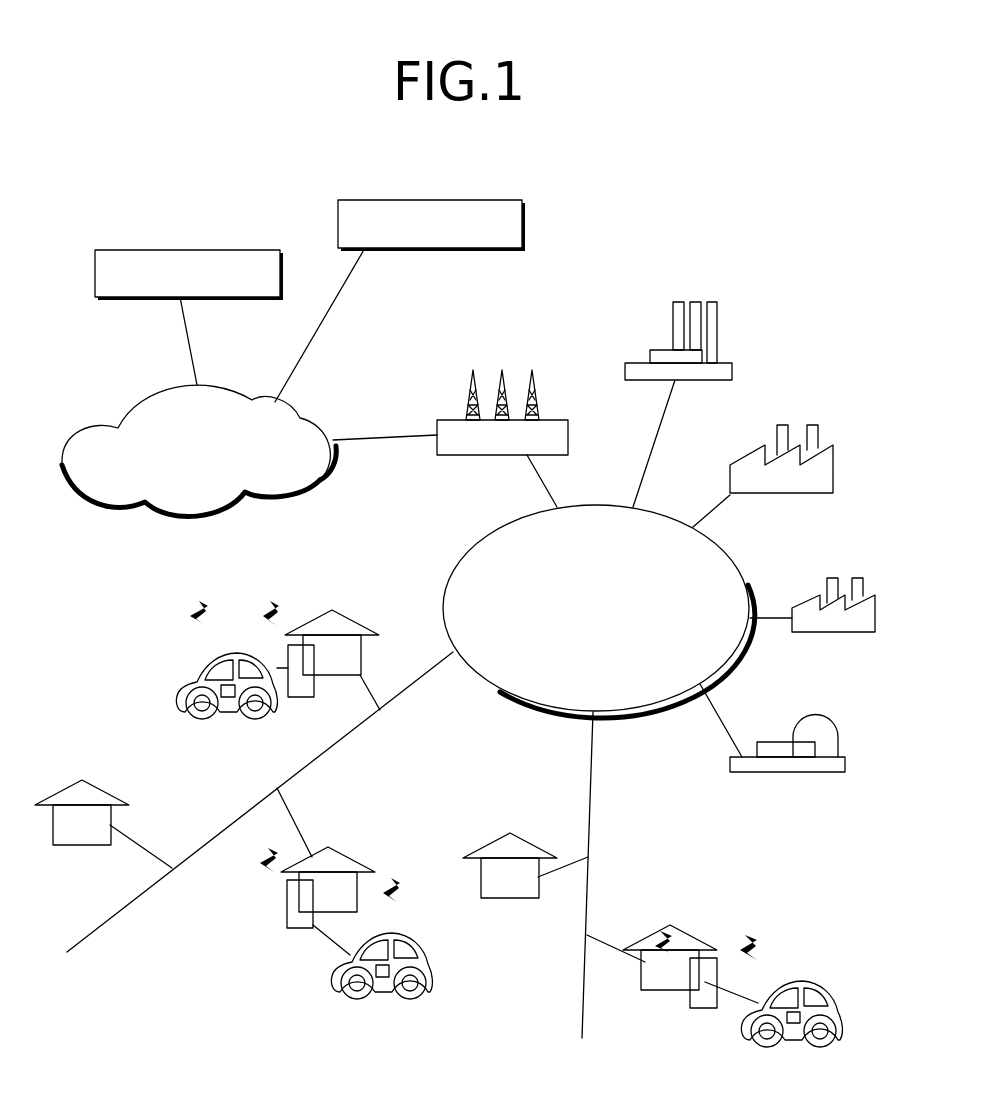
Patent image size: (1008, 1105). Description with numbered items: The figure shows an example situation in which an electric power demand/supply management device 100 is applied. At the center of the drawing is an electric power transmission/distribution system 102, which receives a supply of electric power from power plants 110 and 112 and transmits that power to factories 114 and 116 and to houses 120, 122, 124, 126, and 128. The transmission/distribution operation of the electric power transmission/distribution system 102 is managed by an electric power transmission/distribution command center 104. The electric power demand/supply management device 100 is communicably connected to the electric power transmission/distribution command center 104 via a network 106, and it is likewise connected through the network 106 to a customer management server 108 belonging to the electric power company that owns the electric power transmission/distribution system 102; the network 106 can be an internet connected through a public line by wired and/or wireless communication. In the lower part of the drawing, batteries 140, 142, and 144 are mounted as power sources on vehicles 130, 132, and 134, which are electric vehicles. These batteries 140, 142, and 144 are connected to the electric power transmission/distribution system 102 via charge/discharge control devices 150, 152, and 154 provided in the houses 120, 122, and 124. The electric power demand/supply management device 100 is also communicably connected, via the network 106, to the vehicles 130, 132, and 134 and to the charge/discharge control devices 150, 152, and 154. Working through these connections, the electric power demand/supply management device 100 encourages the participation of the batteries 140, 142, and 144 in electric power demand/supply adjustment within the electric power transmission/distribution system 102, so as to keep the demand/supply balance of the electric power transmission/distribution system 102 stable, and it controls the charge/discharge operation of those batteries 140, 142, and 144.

The electric power demand/supply management device 100 is at (132, 252).
The electric power transmission/distribution system 102 is at (470, 565).
The electric power transmission/distribution command center 104 is at (452, 428).
The network 106 is at (115, 432).
The customer management server 108 is at (378, 200).
The power plant 110 is at (656, 356).
The power plant 112 is at (812, 720).
The factory 114 is at (740, 467).
The factory 116 is at (812, 605).
The house 120 is at (320, 627).
The house 122 is at (338, 848).
The house 124 is at (678, 927).
The house 126 is at (495, 848).
The house 128 is at (80, 795).
The vehicle 130 is at (183, 686).
The vehicle 132 is at (425, 955).
The vehicle 134 is at (832, 1000).
The battery 140 is at (228, 699).
The battery 142 is at (385, 979).
The battery 144 is at (792, 1024).
The charge/discharge control device 150 is at (302, 693).
The charge/discharge control device 152 is at (298, 907).
The charge/discharge control device 154 is at (698, 998).